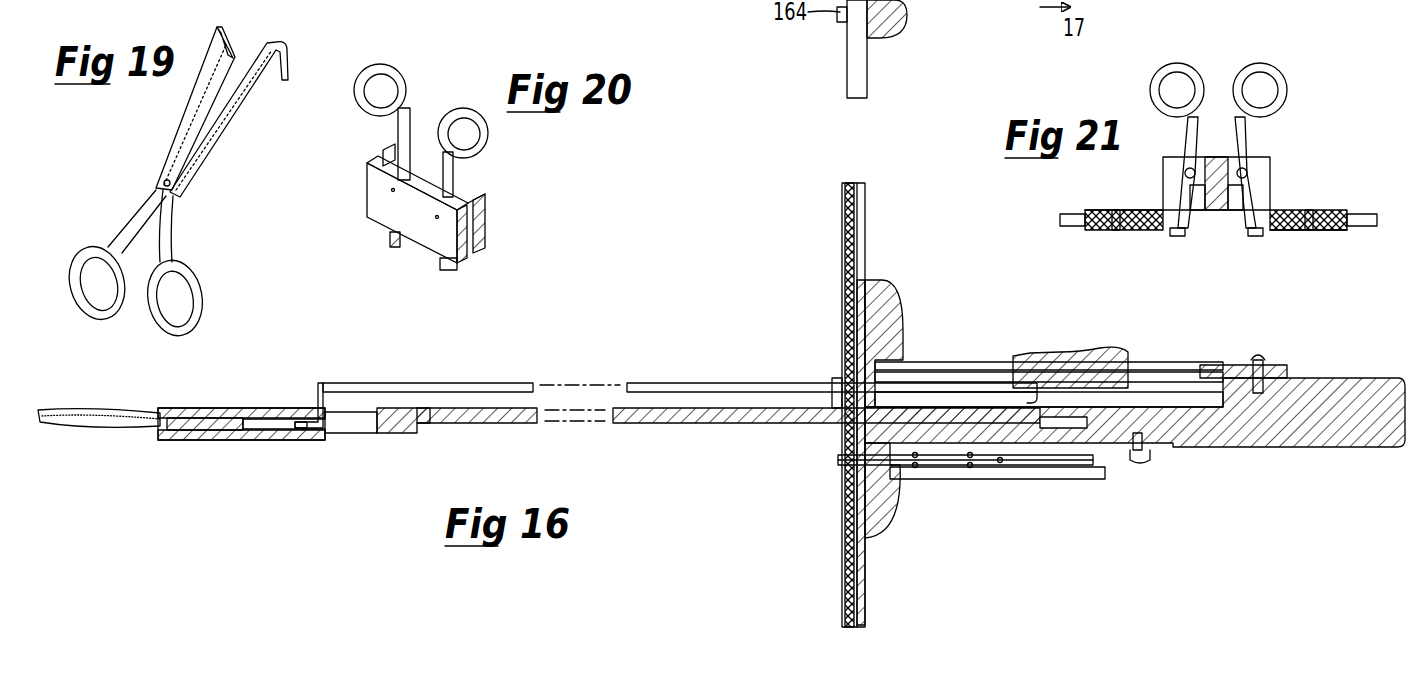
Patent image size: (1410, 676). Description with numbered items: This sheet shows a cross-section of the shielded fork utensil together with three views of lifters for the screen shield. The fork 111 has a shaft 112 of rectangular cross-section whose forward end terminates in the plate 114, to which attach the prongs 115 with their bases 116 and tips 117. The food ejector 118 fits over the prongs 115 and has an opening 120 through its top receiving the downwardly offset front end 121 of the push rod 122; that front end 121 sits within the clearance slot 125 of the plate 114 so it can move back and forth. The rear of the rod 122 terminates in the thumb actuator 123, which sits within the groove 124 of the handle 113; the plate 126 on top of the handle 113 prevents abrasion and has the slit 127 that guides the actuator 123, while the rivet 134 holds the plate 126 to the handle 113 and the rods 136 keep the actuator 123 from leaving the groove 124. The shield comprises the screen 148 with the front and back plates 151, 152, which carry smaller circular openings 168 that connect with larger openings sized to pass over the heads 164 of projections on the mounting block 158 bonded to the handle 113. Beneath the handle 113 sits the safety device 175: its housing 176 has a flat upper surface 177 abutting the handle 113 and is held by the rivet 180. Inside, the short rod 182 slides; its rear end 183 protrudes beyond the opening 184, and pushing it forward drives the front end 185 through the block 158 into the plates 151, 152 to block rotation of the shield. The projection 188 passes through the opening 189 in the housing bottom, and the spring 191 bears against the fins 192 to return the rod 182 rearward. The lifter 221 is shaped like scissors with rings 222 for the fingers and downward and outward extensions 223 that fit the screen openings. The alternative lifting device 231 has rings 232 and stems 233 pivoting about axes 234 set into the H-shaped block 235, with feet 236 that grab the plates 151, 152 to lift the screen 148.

In FIG. 16, the fork 111 is at (539, 416).
In FIG. 16, the shaft 112 is at (630, 424).
In FIG. 16, the handle 113 is at (1372, 385).
In FIG. 16, the plate 114 is at (215, 428).
In FIG. 16, the prongs 115 is at (100, 410).
In FIG. 16, the bases 116 is at (160, 408).
In FIG. 16, the tips 117 is at (45, 405).
In FIG. 16, the food ejector 118 is at (235, 408).
In FIG. 16, the opening 120 is at (318, 400).
In FIG. 16, the front end 121 is at (305, 430).
In FIG. 16, the push rod 122 is at (640, 385).
In FIG. 16, the thumb actuator 123 is at (1085, 355).
In FIG. 16, the groove 124 is at (1160, 395).
In FIG. 16, the clearance slot 125 is at (340, 433).
In FIG. 16, the plate 126 is at (1282, 365).
In FIG. 16, the slit 127 is at (1145, 363).
In FIG. 16, the rivet 134 is at (1258, 356).
In FIG. 16, the rods 136 is at (1200, 378).
In FIG. 21, the screen 148 is at (1360, 215).
In FIG. 16, the screen 148 is at (845, 232).
In FIG. 21, the front plate 151 is at (1095, 208).
In FIG. 16, the front plate 151 is at (843, 300).
In FIG. 21, the back plate 152 is at (1340, 231).
In FIG. 16, the back plate 152 is at (868, 282).
In FIG. 16, the mounting block 158 is at (895, 300).
In FIG. 16, the heads 164 is at (835, 383).
In FIG. 21, the smaller circular openings 168 is at (1117, 231).
In FIG. 16, the safety device 175 is at (1025, 497).
In FIG. 16, the housing 176 is at (1040, 480).
In FIG. 16, the flat upper surface 177 is at (1115, 452).
In FIG. 16, the rivet 180 is at (1142, 462).
In FIG. 16, the short rod 182 is at (878, 462).
In FIG. 16, the rear end 183 is at (1100, 468).
In FIG. 16, the opening 184 is at (1090, 475).
In FIG. 16, the front end 185 is at (838, 458).
In FIG. 16, the projection 188 is at (1000, 463).
In FIG. 16, the opening 189 is at (1040, 480).
In FIG. 16, the spring 191 is at (915, 468).
In FIG. 16, the fins 192 is at (975, 466).
In FIG. 19, the lifter 221 is at (215, 162).
In FIG. 19, the rings 222 is at (160, 310).
In FIG. 19, the downward and outward extensions 223 is at (233, 50).
In FIG. 20, the lifting device 231 is at (438, 169).
In FIG. 21, the lifting device 231 is at (1223, 129).
In FIG. 20, the rings 232 is at (460, 112).
In FIG. 21, the rings 232 is at (1262, 63).
In FIG. 20, the stems 233 is at (443, 160).
In FIG. 20, the axes 234 is at (435, 217).
In FIG. 21, the axes 234 is at (1185, 173).
In FIG. 20, the H-shaped block 235 is at (480, 238).
In FIG. 20, the feet 236 is at (443, 270).